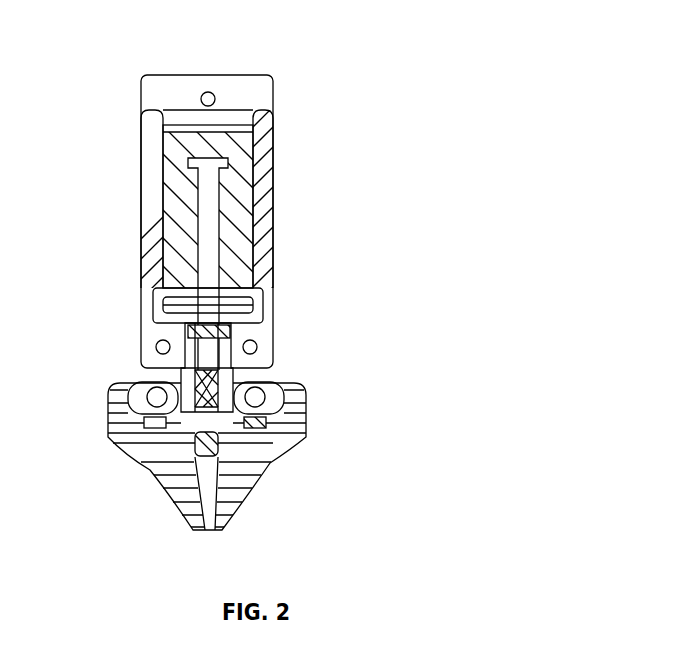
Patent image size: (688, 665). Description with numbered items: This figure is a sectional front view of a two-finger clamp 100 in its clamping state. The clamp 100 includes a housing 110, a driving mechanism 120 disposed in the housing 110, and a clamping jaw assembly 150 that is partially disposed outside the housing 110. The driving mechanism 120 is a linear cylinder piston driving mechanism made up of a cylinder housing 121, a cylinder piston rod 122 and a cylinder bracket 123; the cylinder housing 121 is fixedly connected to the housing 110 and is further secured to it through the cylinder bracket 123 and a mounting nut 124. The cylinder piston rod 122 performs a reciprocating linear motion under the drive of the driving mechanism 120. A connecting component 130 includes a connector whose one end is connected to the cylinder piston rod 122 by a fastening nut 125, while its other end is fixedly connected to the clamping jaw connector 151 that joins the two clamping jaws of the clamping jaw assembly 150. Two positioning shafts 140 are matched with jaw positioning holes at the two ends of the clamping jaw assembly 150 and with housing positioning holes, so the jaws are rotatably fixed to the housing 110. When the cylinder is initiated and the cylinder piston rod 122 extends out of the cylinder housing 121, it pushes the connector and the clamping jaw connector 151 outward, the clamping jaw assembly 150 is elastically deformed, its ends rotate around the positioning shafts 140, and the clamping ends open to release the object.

The clamp 100 is at (98, 27).
The housing 110 is at (245, 98).
The driving mechanism 120 is at (344, 310).
The cylinder housing 121 is at (230, 147).
The cylinder piston rod 122 is at (205, 225).
The cylinder bracket 123 is at (263, 260).
The mounting nut 124 is at (242, 305).
The fastening nut 125 is at (196, 335).
The connecting component 130 is at (213, 385).
The positioning shaft 140 is at (255, 398).
The clamping jaw assembly 150 is at (273, 443).
The clamping jaw connector 151 is at (205, 418).